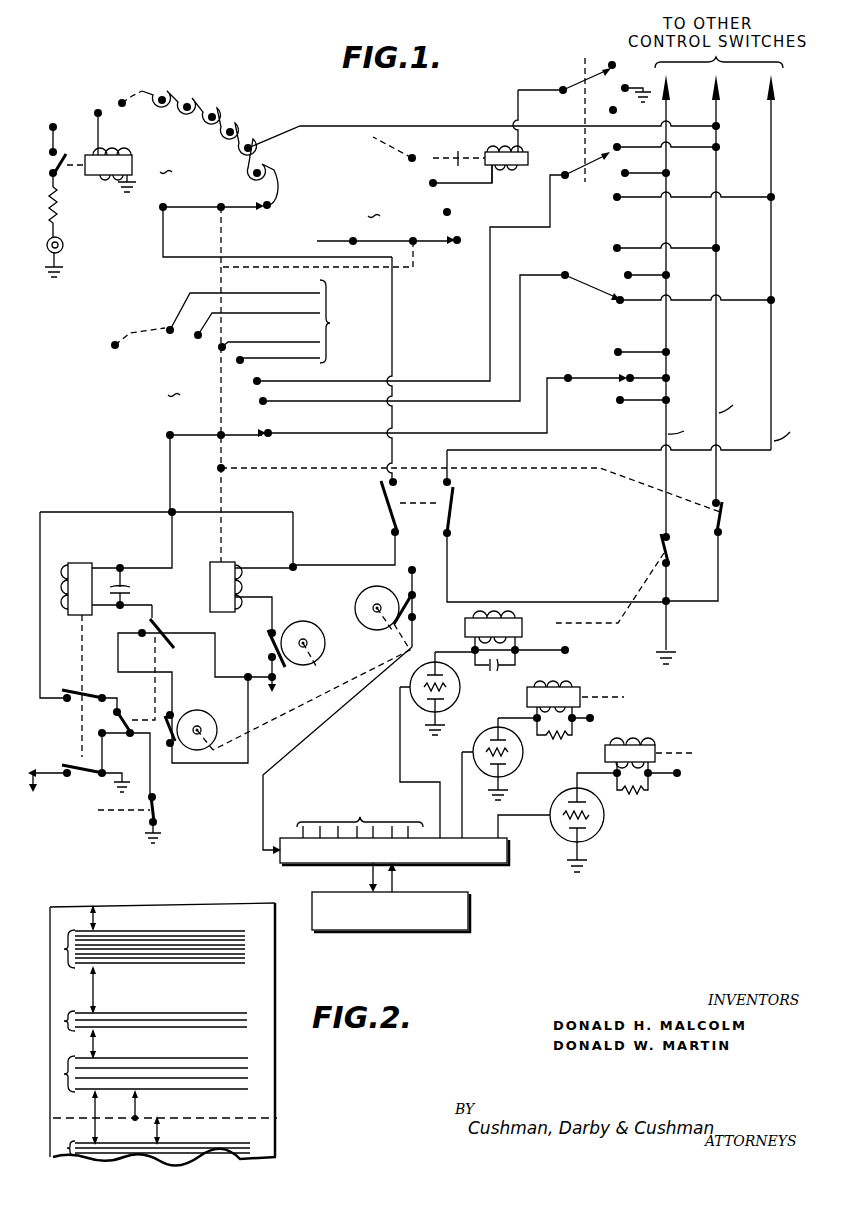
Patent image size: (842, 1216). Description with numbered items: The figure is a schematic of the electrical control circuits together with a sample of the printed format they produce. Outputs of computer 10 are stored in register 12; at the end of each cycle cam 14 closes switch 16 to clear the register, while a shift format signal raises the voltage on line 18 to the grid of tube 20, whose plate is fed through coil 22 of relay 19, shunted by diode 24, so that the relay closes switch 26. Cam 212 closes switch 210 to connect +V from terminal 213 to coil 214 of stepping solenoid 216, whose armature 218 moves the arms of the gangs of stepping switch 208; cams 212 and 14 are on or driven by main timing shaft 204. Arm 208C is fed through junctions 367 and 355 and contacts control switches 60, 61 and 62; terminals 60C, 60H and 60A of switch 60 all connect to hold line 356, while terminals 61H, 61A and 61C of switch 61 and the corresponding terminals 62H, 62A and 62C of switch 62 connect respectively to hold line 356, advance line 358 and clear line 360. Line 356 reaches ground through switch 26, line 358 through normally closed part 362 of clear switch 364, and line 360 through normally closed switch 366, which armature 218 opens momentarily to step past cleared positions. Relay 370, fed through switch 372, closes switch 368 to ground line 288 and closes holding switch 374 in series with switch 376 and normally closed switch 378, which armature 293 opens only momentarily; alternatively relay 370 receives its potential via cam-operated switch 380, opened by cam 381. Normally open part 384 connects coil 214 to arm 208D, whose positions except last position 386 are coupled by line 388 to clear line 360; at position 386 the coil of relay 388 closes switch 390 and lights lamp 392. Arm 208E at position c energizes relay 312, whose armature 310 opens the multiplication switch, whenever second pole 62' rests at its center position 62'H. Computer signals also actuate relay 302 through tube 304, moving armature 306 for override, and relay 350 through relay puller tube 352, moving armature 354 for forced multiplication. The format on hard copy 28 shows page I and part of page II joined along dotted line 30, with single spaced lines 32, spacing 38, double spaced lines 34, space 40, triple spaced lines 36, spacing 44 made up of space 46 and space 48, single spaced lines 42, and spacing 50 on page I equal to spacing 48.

In FIG. 1, the last position of gang D 386 is at (97, 110).
In FIG. 1, the relay switch 390 is at (54, 166).
In FIG. 1, the relay 388 is at (98, 180).
In FIG. 1, the lamp 392 is at (63, 249).
In FIG. 1, the stepping switch 208 is at (151, 194).
In FIG. 1, the switch arm of gang D 208D is at (208, 207).
In FIG. 1, the switch arm of gang E 208E is at (392, 240).
In FIG. 1, the switch arm of gang C 208C is at (200, 426).
In FIG. 1, the armature of relay 312 310 is at (459, 162).
In FIG. 1, the relay 312 is at (507, 180).
In FIG. 1, the second pole of control switch 62' is at (567, 119).
In FIG. 1, the center position of switch 62' 62'H is at (633, 79).
In FIG. 1, the clear contact 62C is at (620, 133).
In FIG. 1, the hold contact 62H is at (626, 172).
In FIG. 1, the control switch 62 is at (433, 266).
In FIG. 1, the advance contact 62A is at (619, 200).
In FIG. 1, the clear terminal of switch 61 61C is at (617, 246).
In FIG. 1, the hold terminal of switch 61 61H is at (629, 273).
In FIG. 1, the control switch 61 is at (594, 290).
In FIG. 1, the advance terminal of switch 61 61A is at (622, 303).
In FIG. 1, the advance line 358 is at (771, 284).
In FIG. 1, the hold line 356 is at (666, 322).
In FIG. 1, the clear line 360 is at (721, 323).
In FIG. 1, the clear terminal of switch 60 60C is at (629, 336).
In FIG. 1, the hold terminal of switch 60 60H is at (638, 366).
In FIG. 1, the control switch 60 is at (603, 368).
In FIG. 1, the advance terminal of switch 60 60A is at (620, 404).
In FIG. 1, the junction 355 is at (171, 508).
In FIG. 1, the normally open switch part 384 is at (346, 411).
In FIG. 1, the normally closed switch part 362 is at (453, 503).
In FIG. 1, the clear switch 364 is at (486, 520).
In FIG. 1, the normally closed switch 366 is at (727, 518).
In FIG. 1, the relay switch 26 is at (664, 548).
In FIG. 1, the junction 367 is at (296, 565).
In FIG. 1, the relay 370 is at (72, 558).
In FIG. 1, the stepping solenoid 216 is at (206, 559).
In FIG. 1, the armature 218 is at (226, 537).
In FIG. 1, the coil 214 is at (208, 586).
In FIG. 1, the switch 372 is at (160, 627).
In FIG. 1, the switch 374 is at (78, 688).
In FIG. 1, the switch 376 is at (132, 720).
In FIG. 1, the cam 381 is at (205, 718).
In FIG. 1, the cam-operated switch 380 is at (171, 747).
In FIG. 1, the line 288 is at (42, 771).
In FIG. 1, the switch 368 is at (97, 777).
In FIG. 1, the armature 293 is at (124, 812).
In FIG. 1, the normally closed switch 378 is at (160, 804).
In FIG. 1, the cam 212 is at (300, 622).
In FIG. 1, the cam 14 is at (358, 617).
In FIG. 1, the switch 16 is at (417, 606).
In FIG. 1, the switch 210 is at (269, 645).
In FIG. 1, the terminal 213 is at (277, 679).
In FIG. 1, the main timing shaft 204 is at (287, 718).
In FIG. 1, the line 18 is at (400, 751).
In FIG. 1, the relay 19 is at (459, 633).
In FIG. 1, the tube 20 is at (454, 701).
In FIG. 1, the coil 22 is at (522, 620).
In FIG. 1, the diode 24 is at (493, 676).
In FIG. 1, the relay 302 is at (576, 688).
In FIG. 1, the armature 306 is at (601, 697).
In FIG. 1, the tube 304 is at (518, 766).
In FIG. 1, the relay 350 is at (660, 738).
In FIG. 1, the armature 354 is at (674, 751).
In FIG. 1, the relay puller tube 352 is at (602, 822).
In FIG. 1, the register 12 is at (490, 862).
In FIG. 1, the computer 10 is at (476, 899).
In FIG. 2, the hard copy 28 is at (284, 980).
In FIG. 2, the spacing 50 is at (95, 916).
In FIG. 2, the single spaced lines 32 is at (66, 949).
In FIG. 2, the spacing 38 is at (95, 986).
In FIG. 2, the double spaced lines 34 is at (66, 1022).
In FIG. 2, the space 40 is at (95, 1045).
In FIG. 2, the triple spaced lines 36 is at (66, 1078).
In FIG. 2, the spacing 44 is at (93, 1113).
In FIG. 2, the space 46 is at (137, 1102).
In FIG. 2, the dotted line 30 is at (197, 1118).
In FIG. 2, the space 48 is at (166, 1124).
In FIG. 2, the single spaced lines 42 is at (70, 1150).